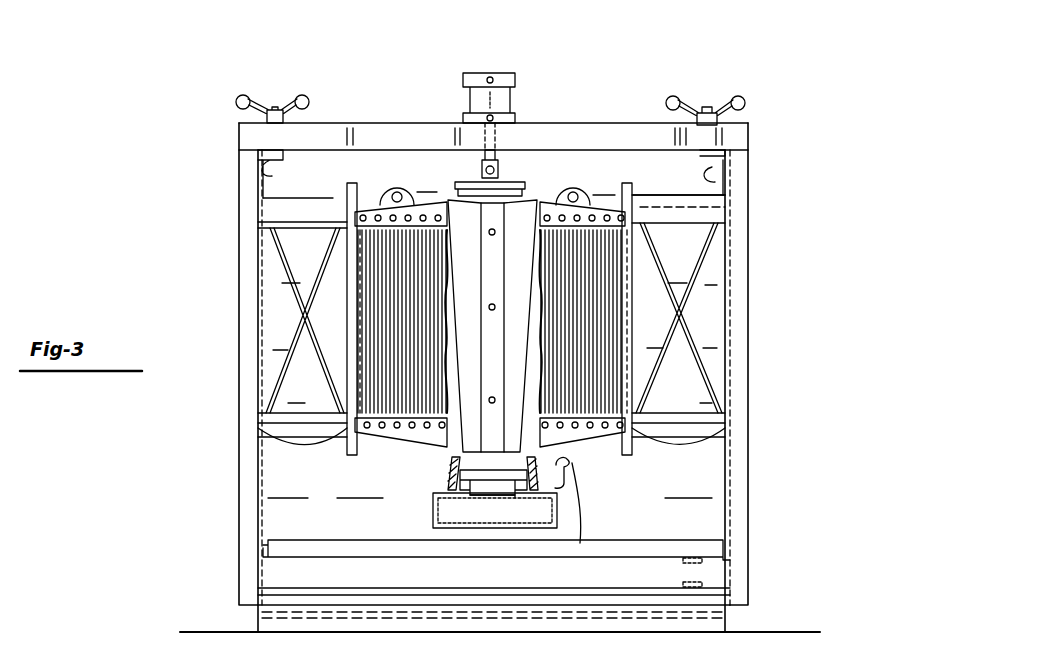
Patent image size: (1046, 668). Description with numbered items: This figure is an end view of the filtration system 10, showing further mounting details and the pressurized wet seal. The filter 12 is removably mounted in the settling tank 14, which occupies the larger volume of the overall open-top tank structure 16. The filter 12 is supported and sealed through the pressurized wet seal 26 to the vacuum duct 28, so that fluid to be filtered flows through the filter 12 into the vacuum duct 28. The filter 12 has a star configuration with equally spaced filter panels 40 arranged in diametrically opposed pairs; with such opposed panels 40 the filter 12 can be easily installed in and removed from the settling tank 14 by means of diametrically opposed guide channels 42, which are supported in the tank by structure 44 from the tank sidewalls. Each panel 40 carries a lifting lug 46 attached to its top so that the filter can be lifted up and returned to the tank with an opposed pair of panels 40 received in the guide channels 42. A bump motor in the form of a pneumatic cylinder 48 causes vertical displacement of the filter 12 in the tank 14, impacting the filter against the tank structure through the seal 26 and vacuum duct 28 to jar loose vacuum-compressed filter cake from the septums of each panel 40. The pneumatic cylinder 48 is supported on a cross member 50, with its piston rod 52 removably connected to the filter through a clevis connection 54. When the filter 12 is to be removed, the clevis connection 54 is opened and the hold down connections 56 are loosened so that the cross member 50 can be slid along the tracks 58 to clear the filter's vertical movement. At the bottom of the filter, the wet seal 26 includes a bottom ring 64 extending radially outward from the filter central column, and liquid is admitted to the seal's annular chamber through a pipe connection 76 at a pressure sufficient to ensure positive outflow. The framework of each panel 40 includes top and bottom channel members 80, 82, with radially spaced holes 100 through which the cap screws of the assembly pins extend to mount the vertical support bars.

The filtration system 10 is at (612, 63).
The filter 12 is at (407, 443).
The settling tank 14 is at (318, 262).
The tank structure 16 is at (752, 430).
The pressurized wet seal 26 is at (443, 473).
The vacuum duct 28 is at (430, 510).
The filter panel 40 is at (387, 372).
The guide channel 42 is at (345, 452).
The support structure 44 is at (295, 330).
The lifting lug 46 is at (407, 190).
The pneumatic cylinder 48 is at (515, 100).
The cross member 50 is at (330, 123).
The piston rod 52 is at (498, 157).
The clevis connection 54 is at (475, 180).
The hold down connection 56 is at (265, 110).
The track 58 is at (270, 158).
The bottom ring 64 is at (503, 478).
The pipe connection 76 is at (580, 543).
The top channel member 80 is at (640, 193).
The bottom channel member 82 is at (577, 440).
The radially spaced holes 100 is at (348, 233).